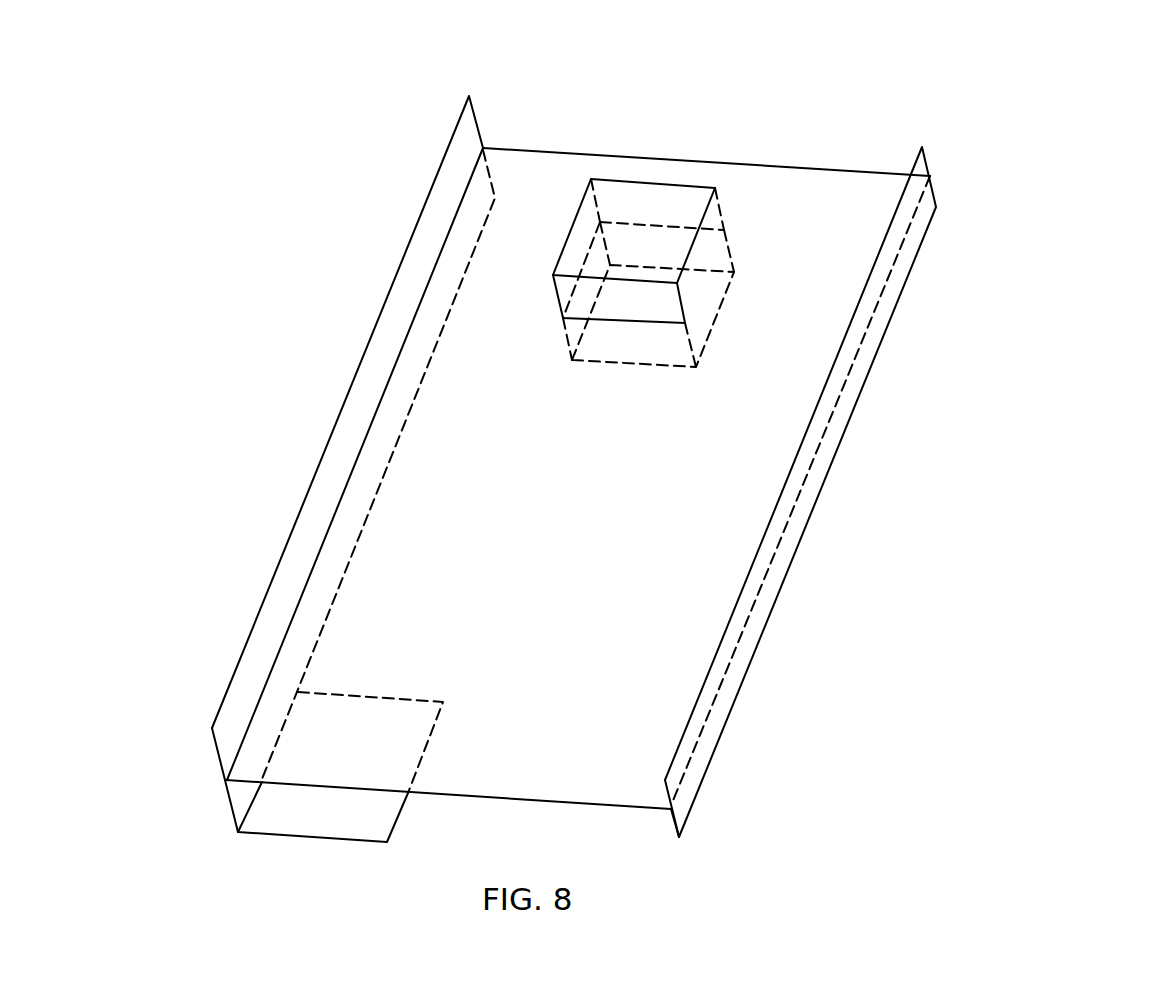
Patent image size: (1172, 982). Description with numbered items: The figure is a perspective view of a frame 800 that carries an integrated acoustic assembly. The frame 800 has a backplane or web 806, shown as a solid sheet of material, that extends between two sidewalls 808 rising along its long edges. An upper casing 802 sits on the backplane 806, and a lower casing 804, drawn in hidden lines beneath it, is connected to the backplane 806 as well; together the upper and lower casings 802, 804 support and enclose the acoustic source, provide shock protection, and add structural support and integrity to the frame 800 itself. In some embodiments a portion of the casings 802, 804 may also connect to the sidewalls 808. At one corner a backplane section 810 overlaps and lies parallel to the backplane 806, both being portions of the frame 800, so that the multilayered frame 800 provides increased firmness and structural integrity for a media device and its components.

The frame 800 is at (1016, 88).
The upper casing 802 is at (657, 190).
The lower casing 804 is at (687, 348).
The backplane 806 is at (665, 603).
The sidewalls 808 is at (355, 398).
The backplane section 810 is at (282, 827).